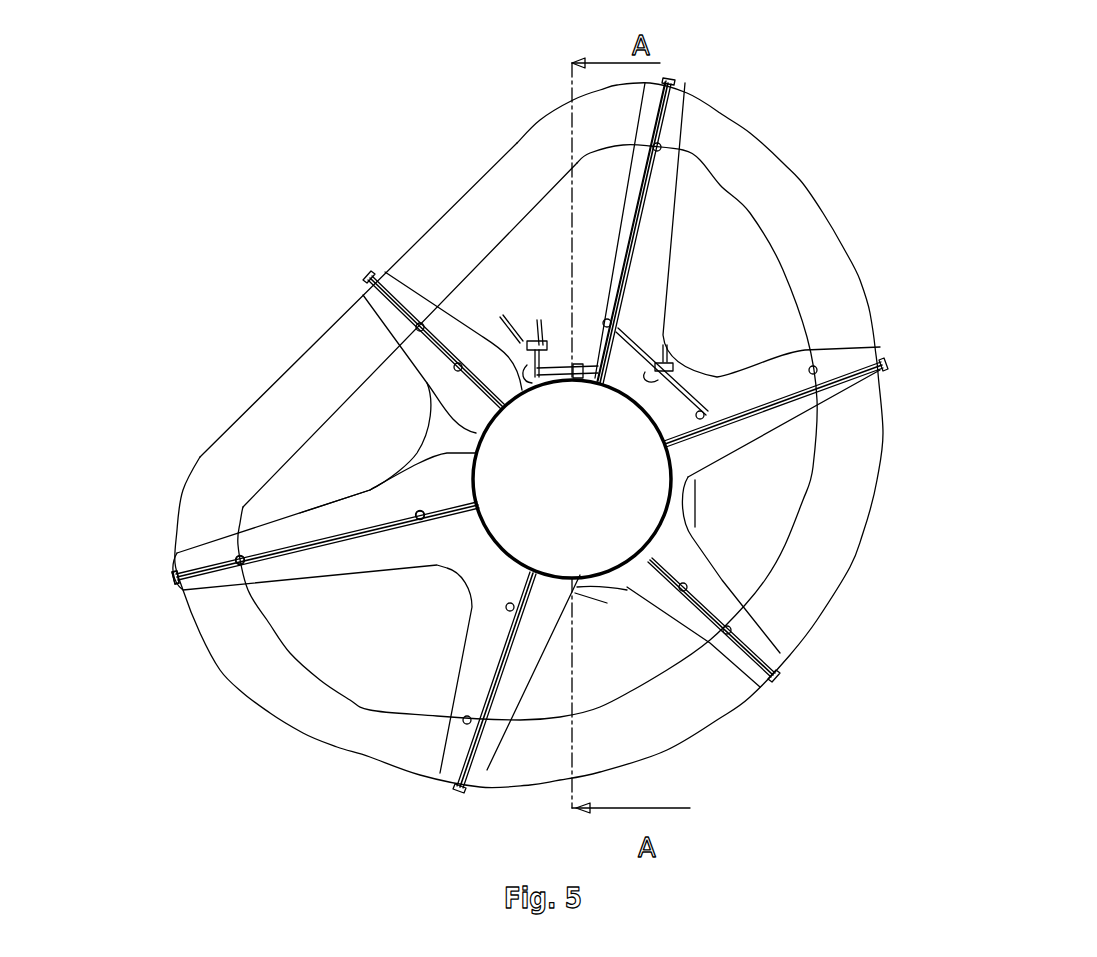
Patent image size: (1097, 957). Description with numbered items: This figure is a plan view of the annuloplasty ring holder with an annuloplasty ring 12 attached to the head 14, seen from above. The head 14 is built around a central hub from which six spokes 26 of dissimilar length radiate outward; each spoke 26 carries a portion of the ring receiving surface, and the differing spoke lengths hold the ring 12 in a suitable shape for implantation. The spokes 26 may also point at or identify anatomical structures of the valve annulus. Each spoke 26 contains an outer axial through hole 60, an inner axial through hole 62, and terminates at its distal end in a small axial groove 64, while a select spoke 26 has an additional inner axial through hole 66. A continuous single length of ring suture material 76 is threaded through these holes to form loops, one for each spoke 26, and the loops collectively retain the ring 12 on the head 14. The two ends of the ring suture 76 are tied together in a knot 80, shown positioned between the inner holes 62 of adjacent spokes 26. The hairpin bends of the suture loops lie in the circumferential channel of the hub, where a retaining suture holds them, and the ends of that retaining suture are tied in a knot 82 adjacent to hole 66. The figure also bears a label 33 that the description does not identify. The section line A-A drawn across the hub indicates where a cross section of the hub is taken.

The annuloplasty ring 12 is at (473, 207).
The head 14 is at (680, 303).
The spoke 26 is at (403, 287).
The upper arm 33 is at (677, 123).
The outer axial through hole 60 is at (240, 563).
The inner axial through hole 62 is at (420, 522).
The small axial groove 64 is at (173, 573).
The additional inner axial through hole 66 is at (572, 373).
The ring suture material 76 is at (313, 547).
The knot 80 is at (668, 365).
The knot 82 is at (545, 380).